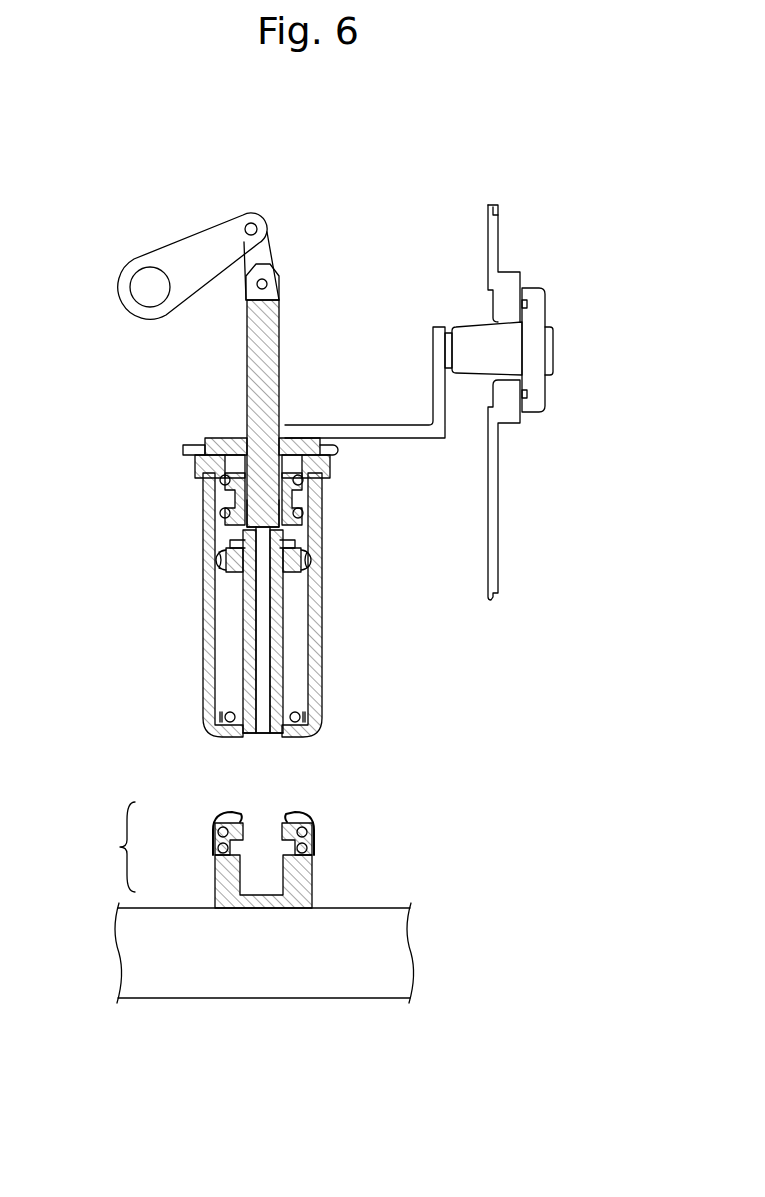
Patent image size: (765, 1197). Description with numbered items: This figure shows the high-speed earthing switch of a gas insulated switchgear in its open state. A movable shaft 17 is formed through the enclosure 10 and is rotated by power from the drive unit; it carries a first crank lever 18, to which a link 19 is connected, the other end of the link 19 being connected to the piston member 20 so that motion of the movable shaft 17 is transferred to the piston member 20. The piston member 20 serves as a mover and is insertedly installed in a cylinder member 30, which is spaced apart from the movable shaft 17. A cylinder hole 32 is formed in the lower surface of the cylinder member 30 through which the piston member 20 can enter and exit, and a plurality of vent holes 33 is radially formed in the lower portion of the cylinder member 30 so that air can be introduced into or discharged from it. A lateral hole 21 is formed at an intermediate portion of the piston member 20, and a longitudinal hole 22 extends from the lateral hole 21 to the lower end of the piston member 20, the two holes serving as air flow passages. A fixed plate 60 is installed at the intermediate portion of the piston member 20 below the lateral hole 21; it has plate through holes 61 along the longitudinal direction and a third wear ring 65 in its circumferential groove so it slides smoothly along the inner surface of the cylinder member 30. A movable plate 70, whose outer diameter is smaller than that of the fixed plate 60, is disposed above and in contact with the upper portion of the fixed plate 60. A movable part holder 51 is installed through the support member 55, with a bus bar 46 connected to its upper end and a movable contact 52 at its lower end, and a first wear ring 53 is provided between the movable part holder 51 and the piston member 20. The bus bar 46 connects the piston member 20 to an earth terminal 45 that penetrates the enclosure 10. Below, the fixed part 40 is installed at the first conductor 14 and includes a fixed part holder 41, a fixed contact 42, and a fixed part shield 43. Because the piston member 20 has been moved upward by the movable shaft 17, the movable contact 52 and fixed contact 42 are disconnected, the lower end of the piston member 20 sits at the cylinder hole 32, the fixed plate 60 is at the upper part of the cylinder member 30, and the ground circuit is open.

The enclosure 10 is at (507, 285).
The first conductor 14 is at (178, 978).
The movable shaft 17 is at (143, 283).
The first crank lever 18 is at (198, 240).
The link 19 is at (265, 255).
The piston member 20 is at (260, 343).
The lateral hole 21 is at (235, 527).
The longitudinal hole 22 is at (268, 637).
The cylinder member 30 is at (318, 594).
The cylinder hole 32 is at (280, 735).
The vent holes 33 is at (225, 712).
The fixed part 40 is at (112, 847).
The fixed part holder 41 is at (220, 882).
The fixed contact 42 is at (222, 840).
The fixed part shield 43 is at (215, 818).
The earth terminal 45 is at (540, 312).
The bus bar 46 is at (392, 423).
The movable part holder 51 is at (220, 440).
The movable contact 52 is at (215, 495).
The first wear ring 53 is at (200, 464).
The support member 55 is at (330, 465).
The fixed plate 60 is at (305, 555).
The plate through holes 61 is at (232, 578).
The third wear ring 65 is at (222, 563).
The movable plate 70 is at (300, 536).